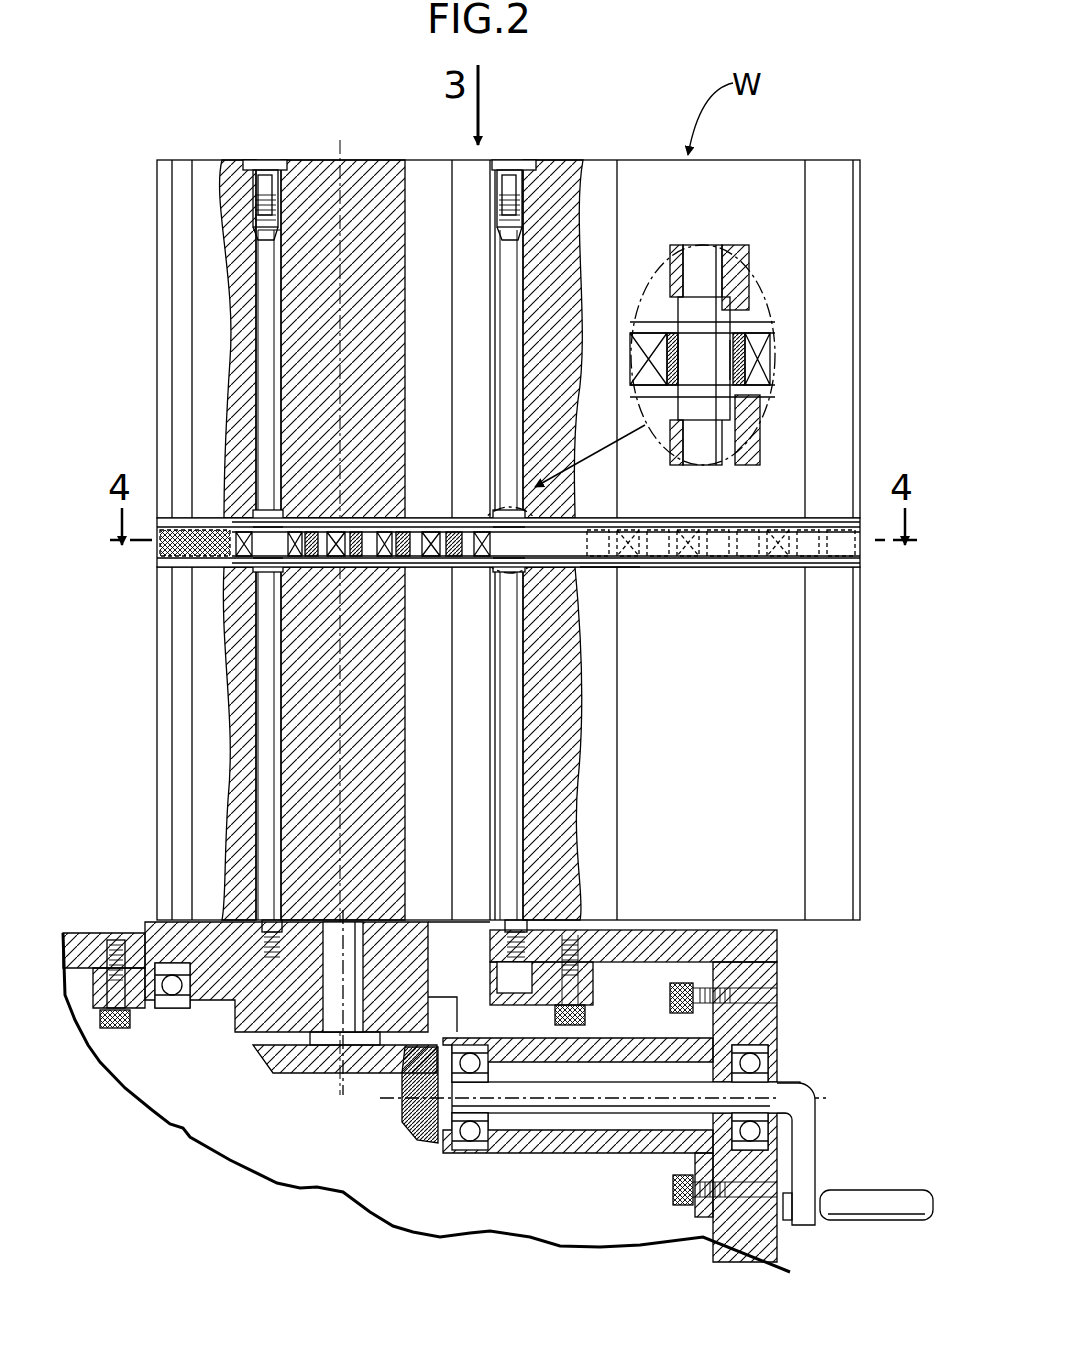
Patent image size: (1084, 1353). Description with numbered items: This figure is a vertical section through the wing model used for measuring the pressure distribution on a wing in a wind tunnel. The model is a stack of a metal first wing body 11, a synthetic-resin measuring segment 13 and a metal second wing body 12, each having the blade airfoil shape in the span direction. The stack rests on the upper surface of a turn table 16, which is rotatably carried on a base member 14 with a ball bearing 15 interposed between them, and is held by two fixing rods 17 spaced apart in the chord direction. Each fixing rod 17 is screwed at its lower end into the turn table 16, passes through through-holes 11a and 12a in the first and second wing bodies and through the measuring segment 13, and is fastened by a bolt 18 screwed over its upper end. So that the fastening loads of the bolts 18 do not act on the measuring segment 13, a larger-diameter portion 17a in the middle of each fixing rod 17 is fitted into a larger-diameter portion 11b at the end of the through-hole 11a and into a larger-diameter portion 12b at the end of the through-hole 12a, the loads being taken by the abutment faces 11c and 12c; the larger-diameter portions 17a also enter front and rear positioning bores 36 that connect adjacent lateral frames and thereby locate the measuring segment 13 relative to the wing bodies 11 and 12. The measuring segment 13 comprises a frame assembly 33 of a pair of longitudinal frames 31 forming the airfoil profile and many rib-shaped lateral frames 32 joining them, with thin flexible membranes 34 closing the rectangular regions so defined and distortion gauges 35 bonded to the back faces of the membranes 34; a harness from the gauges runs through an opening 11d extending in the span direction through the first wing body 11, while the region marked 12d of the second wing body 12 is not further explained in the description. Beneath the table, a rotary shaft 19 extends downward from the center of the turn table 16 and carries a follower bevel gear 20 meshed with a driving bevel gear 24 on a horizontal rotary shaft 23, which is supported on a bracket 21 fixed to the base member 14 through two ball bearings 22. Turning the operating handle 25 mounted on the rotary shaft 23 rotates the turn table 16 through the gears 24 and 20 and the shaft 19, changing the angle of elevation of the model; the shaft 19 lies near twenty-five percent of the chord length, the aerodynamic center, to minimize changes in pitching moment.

The first wing body 11 is at (160, 758).
The through-hole 11a is at (262, 850).
The larger-diameter portion 11b is at (658, 428).
The abutment face 11c is at (740, 398).
The opening 11d is at (405, 782).
The second wing body 12 is at (155, 288).
The through-hole 12a is at (245, 425).
The larger-diameter portion 12b is at (675, 262).
The abutment face 12c is at (738, 292).
The recess of upper plate 12d is at (405, 312).
The measuring segment 13 is at (690, 575).
The base member 14 is at (640, 925).
The ball bearing 15 is at (172, 1005).
The turn table 16 is at (245, 1020).
The fixing rod 17 is at (716, 366).
The larger-diameter portion 17a is at (258, 520).
The bolt 18 is at (268, 165).
The rotary shaft 19 is at (360, 990).
The follower bevel gear 20 is at (272, 1060).
The bracket 21 is at (570, 1150).
The ball bearing 22 is at (470, 1131).
The rotary shaft 23 is at (648, 1102).
The driving bevel gear 24 is at (415, 1140).
The operating handle 25 is at (862, 1200).
The longitudinal frame 31 is at (420, 520).
The lateral frame 32 is at (305, 532).
The frame assembly 33 is at (607, 567).
The thin membrane 34 is at (444, 532).
The distortion gauge 35 is at (196, 575).
The positioning bore 36 is at (675, 362).